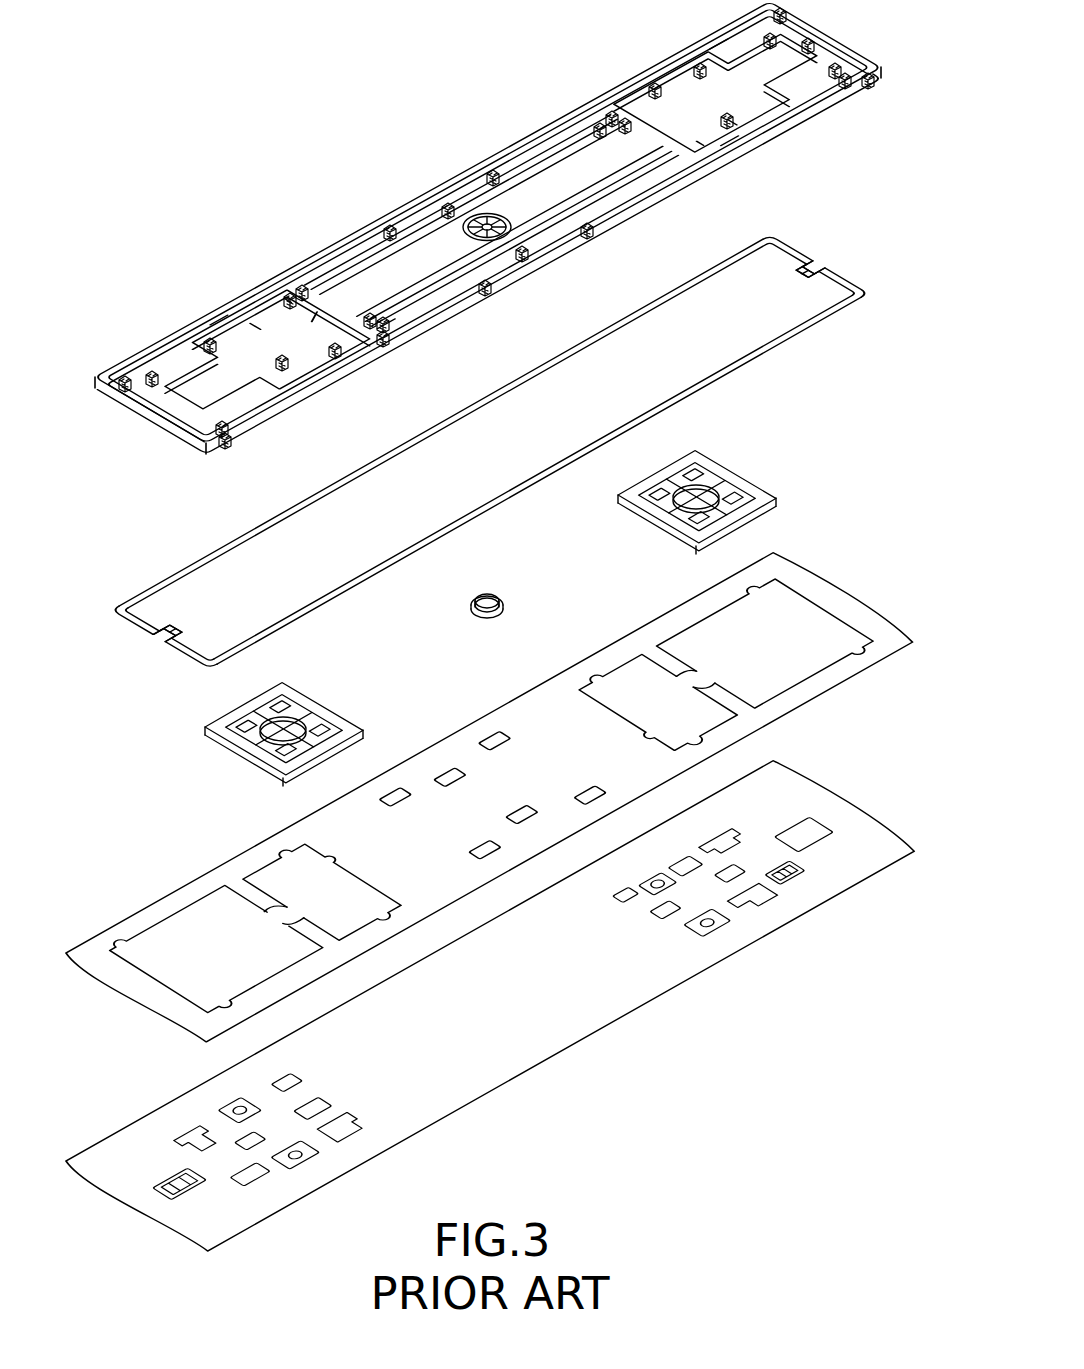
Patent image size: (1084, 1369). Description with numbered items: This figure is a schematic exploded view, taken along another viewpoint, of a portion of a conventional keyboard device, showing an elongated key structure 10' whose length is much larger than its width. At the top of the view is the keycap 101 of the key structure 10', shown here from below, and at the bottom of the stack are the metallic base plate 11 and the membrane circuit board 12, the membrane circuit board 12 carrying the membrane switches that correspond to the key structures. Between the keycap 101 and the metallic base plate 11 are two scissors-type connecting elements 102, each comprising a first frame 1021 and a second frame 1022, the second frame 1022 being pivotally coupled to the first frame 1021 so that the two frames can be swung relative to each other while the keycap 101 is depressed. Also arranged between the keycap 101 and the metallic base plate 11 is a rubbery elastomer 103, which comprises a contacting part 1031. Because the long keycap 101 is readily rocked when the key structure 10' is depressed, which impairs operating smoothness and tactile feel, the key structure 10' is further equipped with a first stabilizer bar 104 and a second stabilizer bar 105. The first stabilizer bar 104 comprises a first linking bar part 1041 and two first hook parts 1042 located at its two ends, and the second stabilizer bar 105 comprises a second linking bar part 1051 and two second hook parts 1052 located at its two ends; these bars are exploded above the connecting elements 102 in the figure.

The key structure 10' is at (491, 628).
The keycap 101 is at (357, 230).
The scissors-type connecting element 102 is at (501, 598).
The first frame 1021 is at (746, 484).
The second frame 1022 is at (666, 520).
The rubbery elastomer 103 is at (481, 631).
The contacting part 1031 is at (451, 627).
The first stabilizer bar 104 is at (465, 437).
The first linking bar part 1041 is at (466, 392).
The first hook part 1042 is at (793, 277).
The second stabilizer bar 105 is at (509, 468).
The second linking bar part 1051 is at (503, 500).
The second hook part 1052 is at (820, 272).
The metallic base plate 11 is at (525, 1054).
The membrane circuit board 12 is at (633, 621).